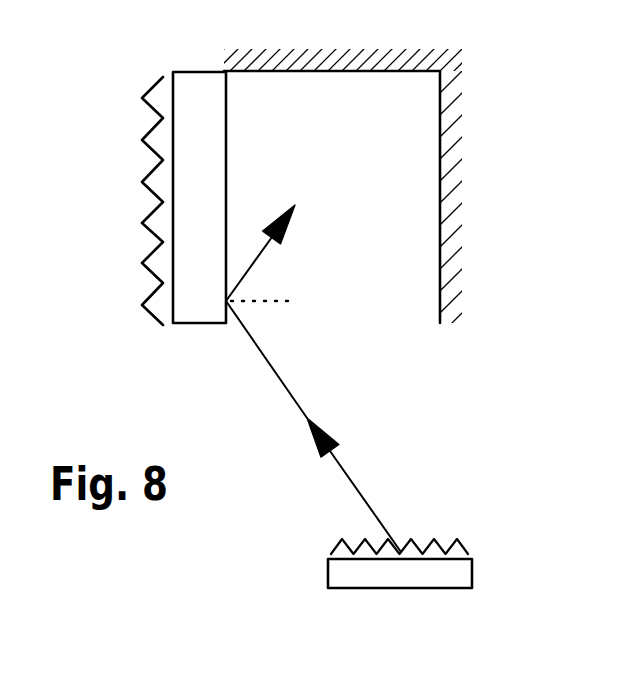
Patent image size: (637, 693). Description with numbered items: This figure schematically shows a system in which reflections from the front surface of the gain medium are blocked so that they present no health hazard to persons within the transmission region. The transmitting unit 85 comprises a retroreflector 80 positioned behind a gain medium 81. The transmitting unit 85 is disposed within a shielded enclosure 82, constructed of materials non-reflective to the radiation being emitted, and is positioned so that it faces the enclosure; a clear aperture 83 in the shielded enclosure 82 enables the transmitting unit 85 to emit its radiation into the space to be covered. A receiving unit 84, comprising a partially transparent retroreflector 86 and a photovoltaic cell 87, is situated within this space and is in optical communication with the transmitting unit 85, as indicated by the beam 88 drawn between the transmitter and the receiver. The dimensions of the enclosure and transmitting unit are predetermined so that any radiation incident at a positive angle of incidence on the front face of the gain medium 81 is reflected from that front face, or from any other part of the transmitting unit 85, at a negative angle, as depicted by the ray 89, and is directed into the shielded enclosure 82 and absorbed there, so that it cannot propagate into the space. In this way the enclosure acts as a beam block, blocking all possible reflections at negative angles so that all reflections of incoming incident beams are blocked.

The retroreflector 80 is at (147, 273).
The gain medium 81 is at (209, 325).
The shielded enclosure 82 is at (452, 168).
The clear aperture 83 is at (437, 337).
The receiving unit 84 is at (485, 537).
The transmitting unit 85 is at (220, 55).
The partially transparent retroreflector 86 is at (356, 545).
The photovoltaic cell 87 is at (328, 579).
The beam 88 is at (306, 422).
The ray 89 is at (272, 240).